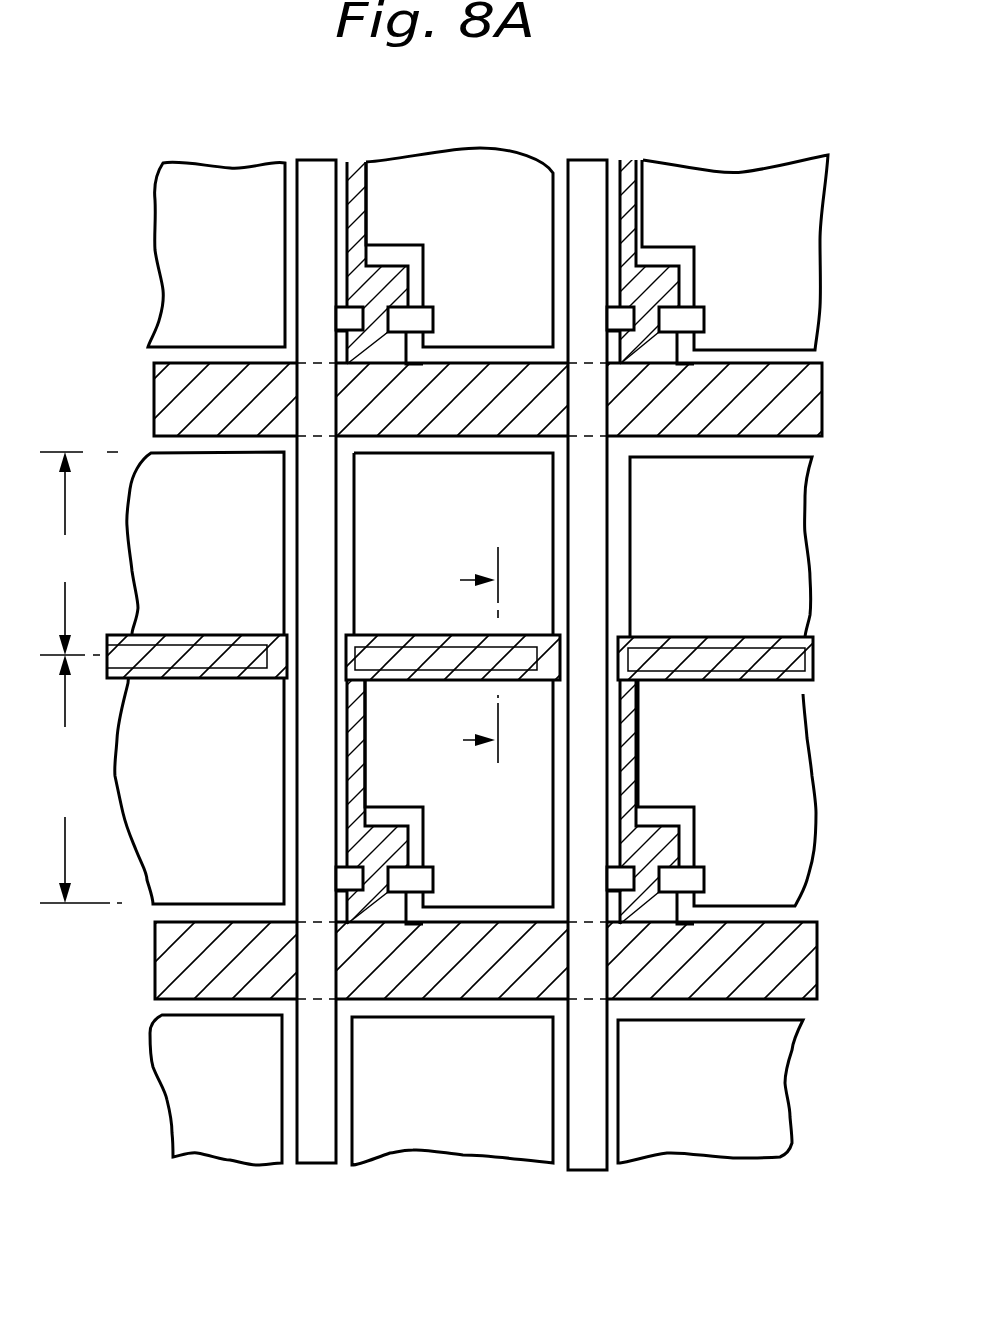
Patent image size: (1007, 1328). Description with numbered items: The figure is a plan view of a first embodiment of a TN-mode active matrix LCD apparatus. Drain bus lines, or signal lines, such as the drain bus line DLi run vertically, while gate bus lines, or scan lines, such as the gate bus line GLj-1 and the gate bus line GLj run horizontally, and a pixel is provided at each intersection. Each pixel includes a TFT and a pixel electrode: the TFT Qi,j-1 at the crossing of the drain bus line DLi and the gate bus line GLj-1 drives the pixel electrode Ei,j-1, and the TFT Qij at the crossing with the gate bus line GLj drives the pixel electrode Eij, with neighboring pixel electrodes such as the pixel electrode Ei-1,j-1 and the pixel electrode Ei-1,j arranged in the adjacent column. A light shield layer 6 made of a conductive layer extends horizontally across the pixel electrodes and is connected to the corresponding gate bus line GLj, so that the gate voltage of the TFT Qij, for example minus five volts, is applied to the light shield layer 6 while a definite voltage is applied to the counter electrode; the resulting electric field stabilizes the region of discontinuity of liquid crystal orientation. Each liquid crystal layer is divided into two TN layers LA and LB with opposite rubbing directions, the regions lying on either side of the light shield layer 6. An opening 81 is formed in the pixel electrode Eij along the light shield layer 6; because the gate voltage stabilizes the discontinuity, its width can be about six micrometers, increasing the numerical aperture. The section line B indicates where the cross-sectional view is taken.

The light shield layer 6 is at (805, 660).
The opening 81 is at (398, 678).
The drain bus line DLi is at (317, 173).
The gate bus line GLj-1 is at (170, 385).
The gate bus line GLj is at (170, 960).
The pixel electrode Ei-1,j-1 is at (220, 238).
The pixel electrode Ei,j-1 is at (455, 265).
The pixel electrode Ei-1,j is at (172, 545).
The pixel electrode Eij is at (418, 528).
The TFT Qi,j-1 is at (373, 334).
The TFT Qij is at (375, 898).
The TN layer LA is at (81, 779).
The TN layer LB is at (79, 553).
The line B— B is at (466, 655).